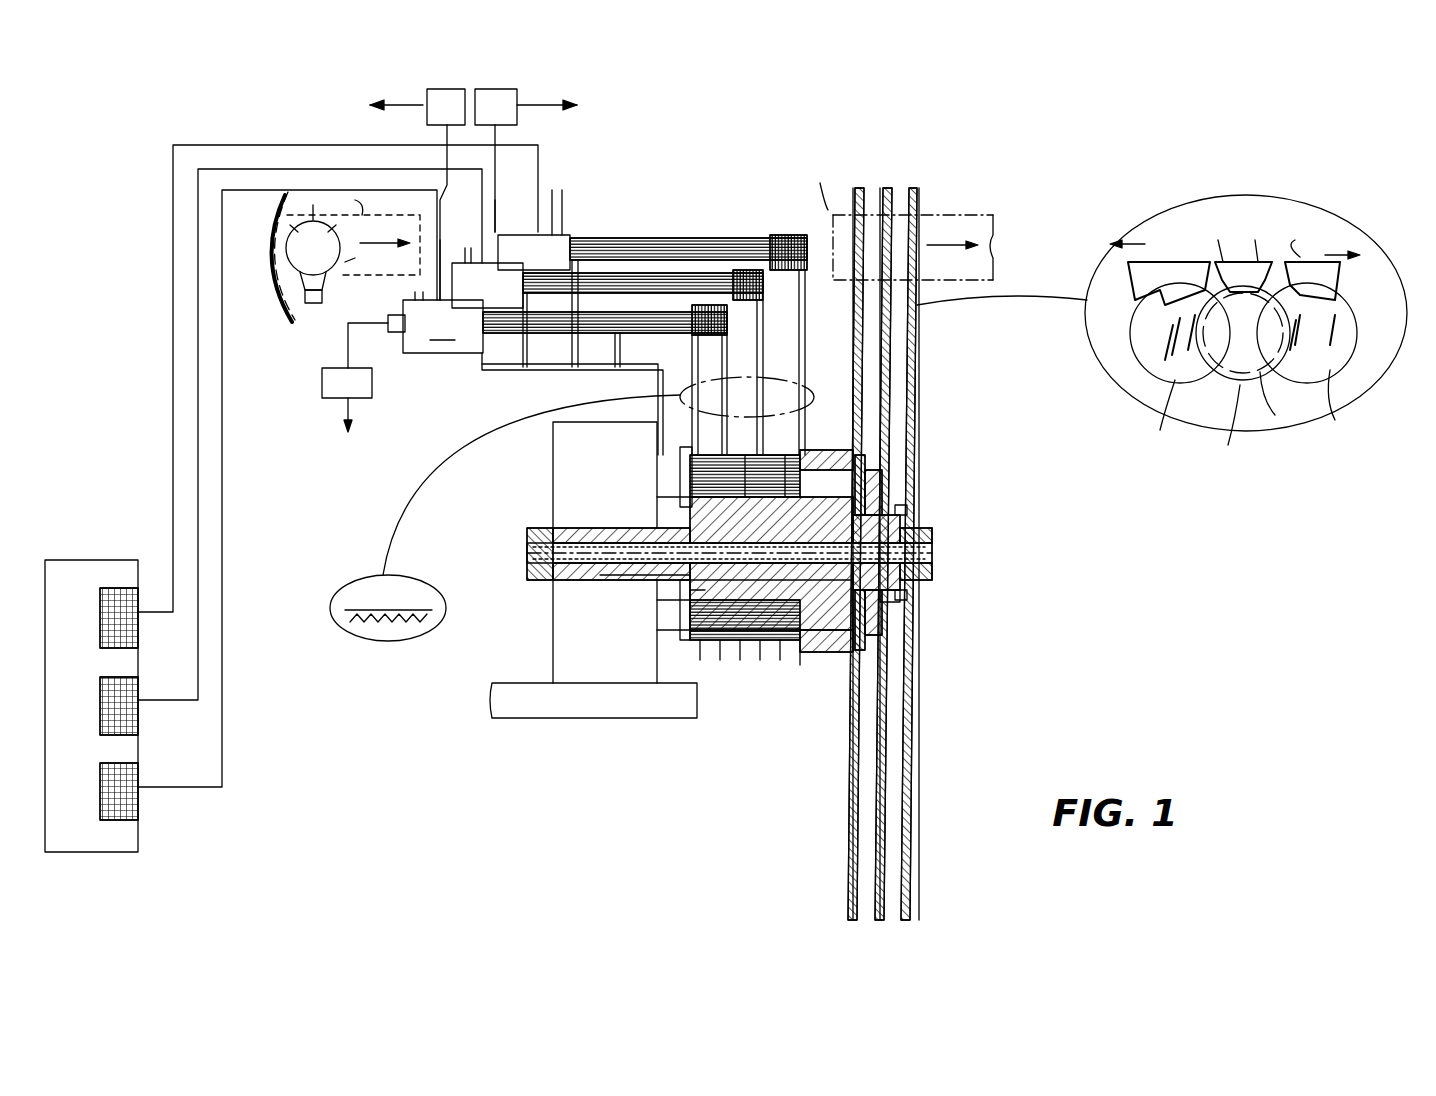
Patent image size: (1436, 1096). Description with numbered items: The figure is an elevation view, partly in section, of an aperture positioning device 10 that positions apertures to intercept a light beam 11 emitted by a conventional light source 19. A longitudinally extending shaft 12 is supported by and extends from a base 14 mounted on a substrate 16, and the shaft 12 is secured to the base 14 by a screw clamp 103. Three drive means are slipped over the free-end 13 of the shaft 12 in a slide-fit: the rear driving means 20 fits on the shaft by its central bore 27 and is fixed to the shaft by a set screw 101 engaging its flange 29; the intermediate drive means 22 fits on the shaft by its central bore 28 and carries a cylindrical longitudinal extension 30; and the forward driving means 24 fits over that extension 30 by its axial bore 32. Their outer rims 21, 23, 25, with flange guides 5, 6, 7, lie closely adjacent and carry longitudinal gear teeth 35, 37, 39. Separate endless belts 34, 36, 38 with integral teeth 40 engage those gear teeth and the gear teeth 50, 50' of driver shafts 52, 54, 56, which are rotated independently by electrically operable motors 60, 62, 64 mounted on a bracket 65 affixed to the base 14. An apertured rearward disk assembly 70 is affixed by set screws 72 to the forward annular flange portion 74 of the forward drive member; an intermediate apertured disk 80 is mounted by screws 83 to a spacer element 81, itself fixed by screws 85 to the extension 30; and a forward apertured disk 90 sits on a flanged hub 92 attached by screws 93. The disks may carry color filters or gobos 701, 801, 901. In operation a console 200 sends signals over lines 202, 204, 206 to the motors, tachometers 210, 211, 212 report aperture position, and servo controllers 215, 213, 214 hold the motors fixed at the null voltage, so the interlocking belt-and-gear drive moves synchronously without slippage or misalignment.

The flange guide 5 is at (678, 469).
The flange guide 6 is at (720, 660).
The flange guide 7 is at (760, 660).
The aperture positioning device 10 is at (468, 475).
The light beam 11 is at (813, 308).
The longitudinally extending shaft 12 is at (527, 560).
The free-end 13 is at (955, 531).
The base 14 is at (566, 463).
The substrate 16 is at (520, 718).
The light source 19 is at (343, 260).
The rear driving means 20 is at (675, 600).
The outer rim 21 is at (695, 490).
The intermediate drive means 22 is at (700, 660).
The outer rim 23 is at (742, 459).
The forward driving means 24 is at (740, 660).
The outer rim 25 is at (782, 457).
The central bore 27 is at (640, 578).
The central bore 28 is at (771, 577).
The flange 29 is at (690, 590).
The cylindrical longitudinal extension 30 is at (685, 500).
The axial bore 32 is at (900, 500).
The endless belt 34 is at (710, 360).
The gear teeth 35 is at (688, 640).
The endless belt 36 is at (765, 323).
The gear teeth 37 is at (752, 640).
The endless belt 38 is at (808, 300).
The gear teeth 39 is at (780, 660).
The integral teeth 40 is at (380, 641).
The gear teeth 50 is at (566, 330).
The gear teeth 50' is at (643, 249).
The driver shaft 52 is at (612, 355).
The driver shaft 54 is at (665, 310).
The driver shaft 56 is at (630, 238).
The electrically operable motor 60 is at (443, 322).
The electrically operable motor 62 is at (487, 270).
The electrically operable motor 64 is at (534, 222).
The bracket 65 is at (505, 370).
The rearward disk assembly 70 is at (858, 188).
The set screws 72 is at (865, 460).
The forward annular flange portion 74 is at (825, 450).
The intermediate apertured disk 80 is at (887, 188).
The spacer element 81 is at (800, 665).
The screws 83 is at (882, 490).
The screws 85 is at (925, 575).
The forward apertured disk 90 is at (917, 195).
The flanged hub 92 is at (900, 596).
The screws 93 is at (907, 510).
The set screw 101 is at (640, 528).
The screw clamp 103 is at (540, 528).
The console 200 is at (160, 824).
The line 202 is at (222, 598).
The line 204 is at (198, 518).
The line 206 is at (173, 506).
The tachometer 210 is at (388, 320).
The tachometer 211 is at (445, 245).
The tachometer 212 is at (497, 235).
The servo controller 213 is at (420, 125).
The servo controller 214 is at (518, 125).
The servo controller 215 is at (322, 383).
The gobo 701 is at (866, 195).
The gobo 801 is at (892, 200).
The gobo 901 is at (917, 235).